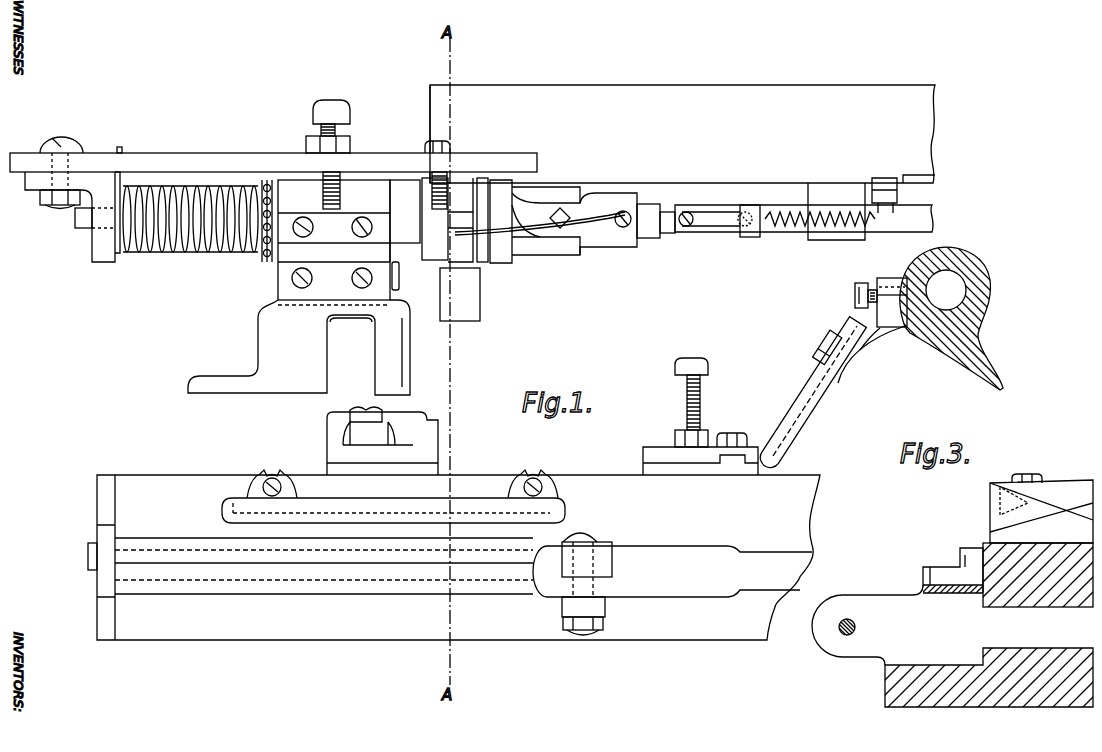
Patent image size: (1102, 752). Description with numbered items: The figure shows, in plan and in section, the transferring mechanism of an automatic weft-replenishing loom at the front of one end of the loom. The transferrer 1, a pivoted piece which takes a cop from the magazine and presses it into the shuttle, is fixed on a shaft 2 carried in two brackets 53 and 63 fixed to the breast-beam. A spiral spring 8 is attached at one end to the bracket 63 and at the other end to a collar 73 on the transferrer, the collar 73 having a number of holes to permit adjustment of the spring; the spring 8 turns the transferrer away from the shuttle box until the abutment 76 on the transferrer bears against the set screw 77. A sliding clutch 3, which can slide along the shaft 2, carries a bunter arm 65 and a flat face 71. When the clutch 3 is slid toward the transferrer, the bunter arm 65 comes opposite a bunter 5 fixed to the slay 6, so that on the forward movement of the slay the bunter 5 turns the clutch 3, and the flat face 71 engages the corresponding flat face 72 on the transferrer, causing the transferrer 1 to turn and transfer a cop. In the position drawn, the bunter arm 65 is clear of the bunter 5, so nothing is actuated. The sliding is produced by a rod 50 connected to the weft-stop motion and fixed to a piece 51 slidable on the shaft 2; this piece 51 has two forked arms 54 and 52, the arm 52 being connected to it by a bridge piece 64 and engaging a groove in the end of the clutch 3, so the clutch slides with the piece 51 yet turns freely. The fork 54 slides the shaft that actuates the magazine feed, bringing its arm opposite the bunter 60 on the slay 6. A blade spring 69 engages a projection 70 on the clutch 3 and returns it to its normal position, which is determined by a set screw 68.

In FIG. 1, the transferrer 1 is at (299, 287).
In FIG. 3, the transferrer 1 is at (796, 408).
In FIG. 1, the shaft 2 is at (82, 220).
In FIG. 1, the sliding clutch 3 is at (479, 248).
In FIG. 3, the sliding clutch 3 is at (968, 266).
In FIG. 1, the bunter 5 is at (428, 425).
In FIG. 3, the bunter 5 is at (990, 487).
In FIG. 1, the slay 6 is at (454, 557).
In FIG. 3, the slay 6 is at (998, 560).
In FIG. 1, the spiral spring 8 is at (194, 250).
In FIG. 1, the rod 50 is at (908, 225).
In FIG. 1, the piece 51 is at (652, 226).
In FIG. 1, the forked arm 52 is at (492, 256).
In FIG. 1, the bracket 53 is at (545, 240).
In FIG. 1, the forked arm 54 is at (623, 242).
In FIG. 1, the bunter 60 is at (693, 364).
In FIG. 1, the bracket 63 is at (176, 162).
In FIG. 1, the bridge piece 64 is at (598, 235).
In FIG. 1, the bunter arm 65 is at (472, 308).
In FIG. 3, the bunter arm 65 is at (980, 364).
In FIG. 1, the set screw 68 is at (437, 142).
In FIG. 1, the blade spring 69 is at (531, 220).
In FIG. 1, the projection 70 is at (460, 213).
In FIG. 1, the flat face 71 is at (435, 246).
In FIG. 3, the flat face 71 is at (896, 313).
In FIG. 1, the flat face 72 is at (395, 260).
In FIG. 3, the flat face 72 is at (871, 340).
In FIG. 1, the collar 73 is at (261, 258).
In FIG. 1, the abutment 76 is at (332, 252).
In FIG. 3, the abutment 76 is at (876, 282).
In FIG. 1, the set screw 77 is at (340, 108).